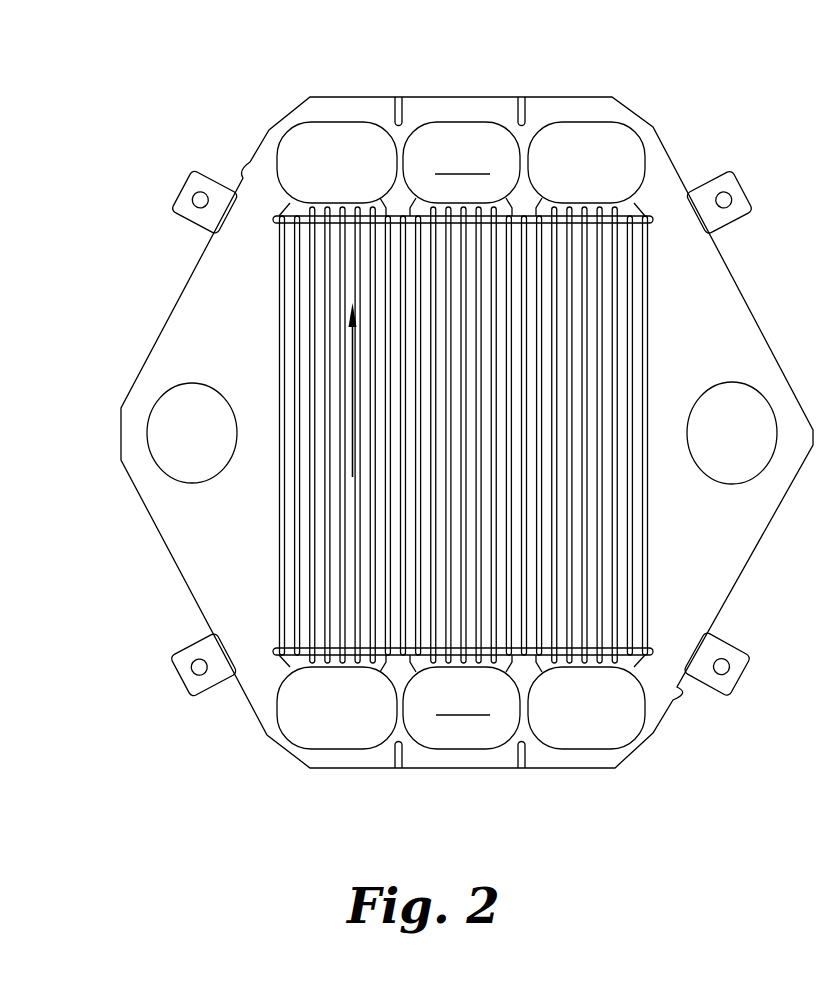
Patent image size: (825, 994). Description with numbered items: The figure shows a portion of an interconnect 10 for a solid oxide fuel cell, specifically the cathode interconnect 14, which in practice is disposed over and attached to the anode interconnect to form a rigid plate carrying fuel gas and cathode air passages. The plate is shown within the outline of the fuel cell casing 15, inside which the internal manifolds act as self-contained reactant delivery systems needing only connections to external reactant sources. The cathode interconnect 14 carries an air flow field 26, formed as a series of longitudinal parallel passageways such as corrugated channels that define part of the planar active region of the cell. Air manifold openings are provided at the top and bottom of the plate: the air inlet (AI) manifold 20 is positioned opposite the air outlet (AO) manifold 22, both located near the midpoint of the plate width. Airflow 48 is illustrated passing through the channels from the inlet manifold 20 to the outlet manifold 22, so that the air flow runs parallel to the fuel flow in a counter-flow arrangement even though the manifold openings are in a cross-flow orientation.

The interconnect 10 is at (80, 92).
The cathode interconnect structure 14 is at (648, 549).
The fuel cell casing 15 is at (757, 313).
The air inlet manifold 20 is at (462, 722).
The air outlet manifold 22 is at (472, 140).
The air flow field 26 is at (412, 497).
The airflow 48 is at (352, 357).